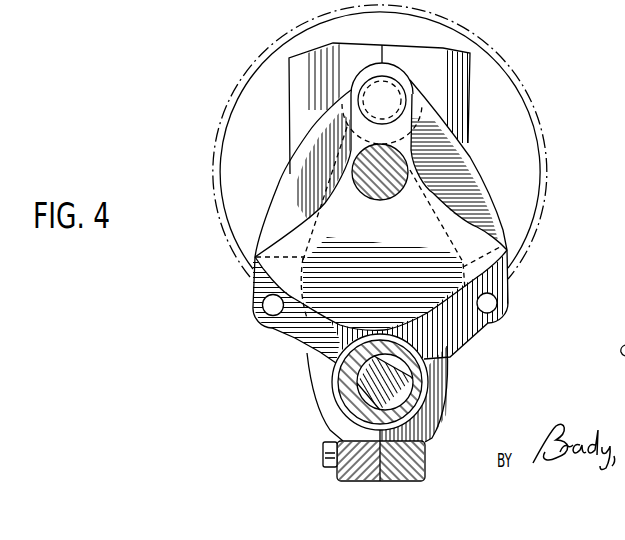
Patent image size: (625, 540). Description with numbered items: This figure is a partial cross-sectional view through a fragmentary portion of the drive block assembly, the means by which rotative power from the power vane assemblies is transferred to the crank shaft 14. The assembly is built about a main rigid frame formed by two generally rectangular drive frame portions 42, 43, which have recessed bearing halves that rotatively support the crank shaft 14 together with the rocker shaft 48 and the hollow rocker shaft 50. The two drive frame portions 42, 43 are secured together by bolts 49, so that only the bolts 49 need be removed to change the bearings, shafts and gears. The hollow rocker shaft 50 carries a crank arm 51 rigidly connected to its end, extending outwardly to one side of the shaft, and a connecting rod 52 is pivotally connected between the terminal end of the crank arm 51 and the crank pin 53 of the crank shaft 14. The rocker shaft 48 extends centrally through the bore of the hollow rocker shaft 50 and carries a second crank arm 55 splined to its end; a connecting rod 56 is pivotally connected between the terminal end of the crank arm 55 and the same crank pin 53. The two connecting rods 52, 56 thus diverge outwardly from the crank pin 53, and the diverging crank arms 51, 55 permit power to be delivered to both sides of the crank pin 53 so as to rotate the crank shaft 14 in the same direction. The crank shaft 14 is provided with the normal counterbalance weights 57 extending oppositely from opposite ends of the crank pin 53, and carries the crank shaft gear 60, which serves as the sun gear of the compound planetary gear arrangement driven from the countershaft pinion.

The crank shaft 14 is at (362, 195).
The drive frame portion 42 is at (425, 447).
The drive frame portion 43 is at (343, 438).
The rocker shaft 48 is at (390, 387).
The bolts 49 is at (323, 453).
The hollow rocker shaft 50 is at (340, 380).
The crank arm 51 is at (293, 340).
The connecting rod 52 is at (281, 175).
The crank pin 53 is at (399, 69).
The crank arm 55 is at (477, 337).
The connecting rod 56 is at (482, 176).
The counterbalance weights 57 is at (419, 246).
The crank shaft gear 60 is at (523, 110).